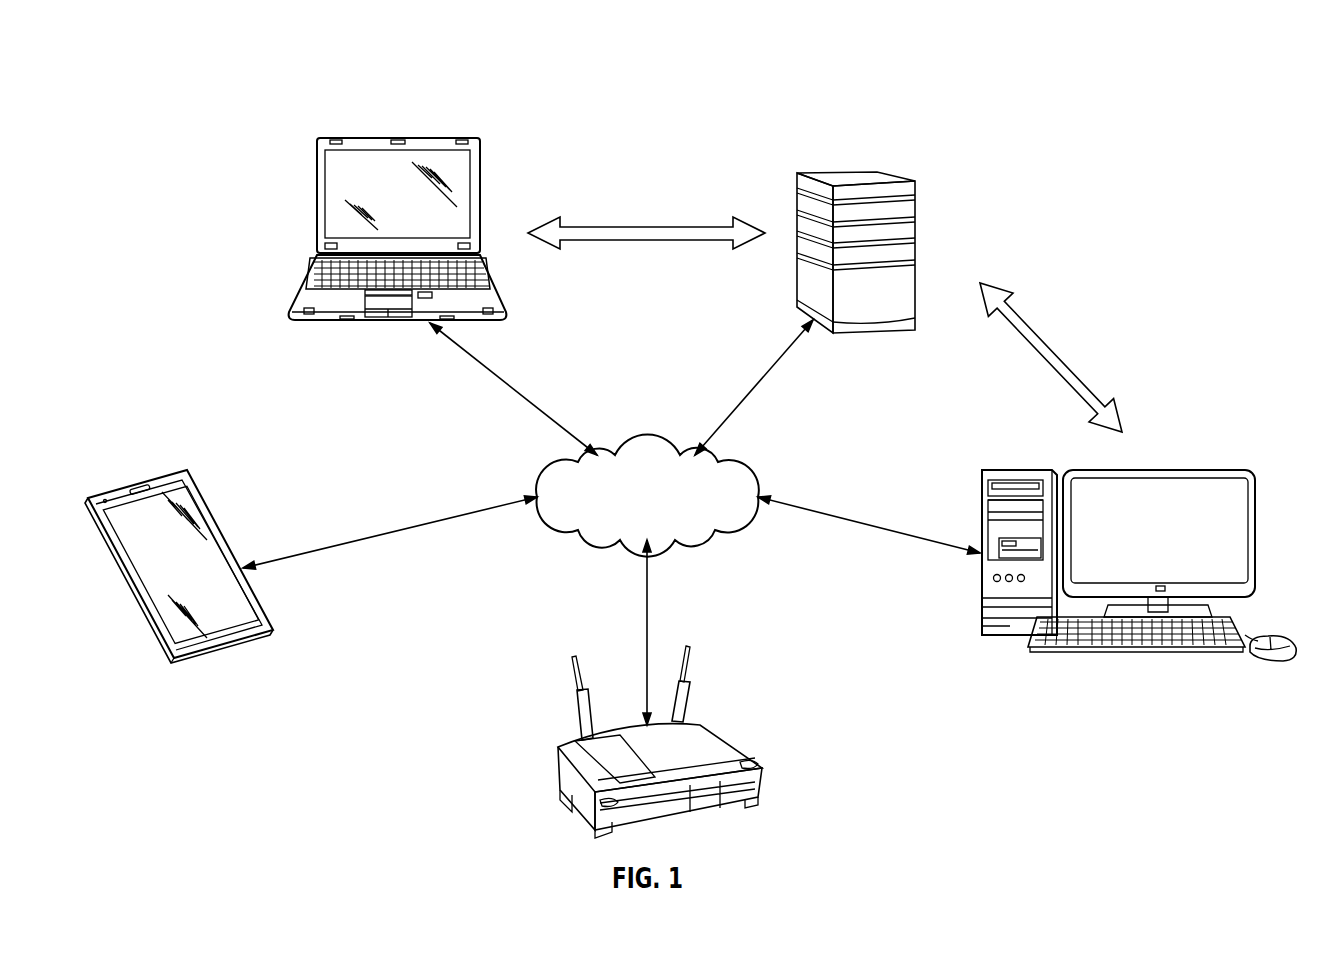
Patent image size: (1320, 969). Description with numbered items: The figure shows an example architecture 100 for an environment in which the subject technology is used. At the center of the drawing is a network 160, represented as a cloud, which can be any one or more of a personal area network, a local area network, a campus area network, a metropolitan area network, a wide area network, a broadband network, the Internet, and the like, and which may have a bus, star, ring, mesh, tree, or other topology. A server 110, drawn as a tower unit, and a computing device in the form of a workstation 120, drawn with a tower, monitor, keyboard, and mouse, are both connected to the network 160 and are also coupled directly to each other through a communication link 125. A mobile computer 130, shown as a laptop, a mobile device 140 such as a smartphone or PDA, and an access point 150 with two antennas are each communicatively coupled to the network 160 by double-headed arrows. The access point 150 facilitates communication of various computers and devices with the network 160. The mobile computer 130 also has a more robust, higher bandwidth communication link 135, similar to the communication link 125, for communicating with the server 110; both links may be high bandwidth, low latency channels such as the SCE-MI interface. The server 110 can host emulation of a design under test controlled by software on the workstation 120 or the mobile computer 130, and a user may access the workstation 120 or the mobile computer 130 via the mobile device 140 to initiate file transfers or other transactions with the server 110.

The architecture 100 is at (1177, 91).
The server 110 is at (862, 172).
The computing device (workstation) 120 is at (1224, 470).
The communication link 125 is at (1055, 345).
The mobile computer 130 is at (373, 165).
The communication link 135 is at (647, 227).
The mobile device 140 is at (160, 483).
The access point 150 is at (720, 740).
The network 160 is at (647, 450).